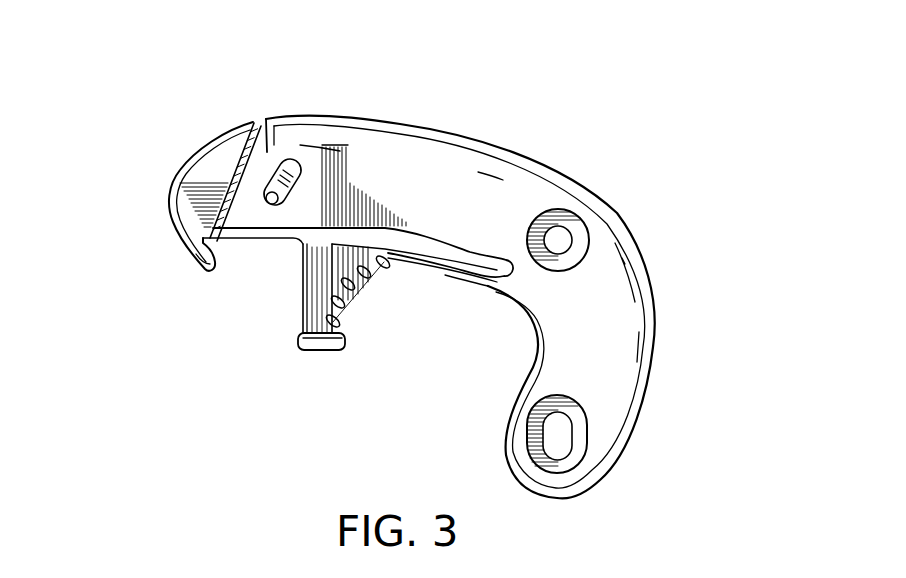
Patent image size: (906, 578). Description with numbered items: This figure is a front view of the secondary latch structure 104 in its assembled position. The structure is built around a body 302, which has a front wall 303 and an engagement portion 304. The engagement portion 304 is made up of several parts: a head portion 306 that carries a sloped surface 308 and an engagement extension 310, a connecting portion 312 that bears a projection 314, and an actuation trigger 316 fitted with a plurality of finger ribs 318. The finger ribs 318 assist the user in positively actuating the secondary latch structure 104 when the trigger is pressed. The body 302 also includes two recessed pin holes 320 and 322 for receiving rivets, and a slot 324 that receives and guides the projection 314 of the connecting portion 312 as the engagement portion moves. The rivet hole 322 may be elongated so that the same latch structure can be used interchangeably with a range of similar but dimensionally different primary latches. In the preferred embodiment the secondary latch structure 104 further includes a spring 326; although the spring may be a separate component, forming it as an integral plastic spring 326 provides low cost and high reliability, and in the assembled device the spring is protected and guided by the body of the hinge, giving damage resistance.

The secondary latch structure 104 is at (429, 103).
The body 302 is at (502, 200).
The front wall 303 is at (315, 167).
The engagement portion 304 is at (297, 240).
The head portion 306 is at (204, 178).
The sloped surface 308 is at (167, 215).
The engagement extension 310 is at (197, 263).
The connecting portion 312 is at (307, 277).
The projection 314 is at (271, 192).
The actuation trigger 316 is at (378, 268).
The finger ribs 318 is at (347, 307).
The recessed pin hole 320 is at (562, 240).
The recessed pin hole 322 is at (557, 440).
The slot 324 is at (293, 160).
The spring 326 is at (482, 287).